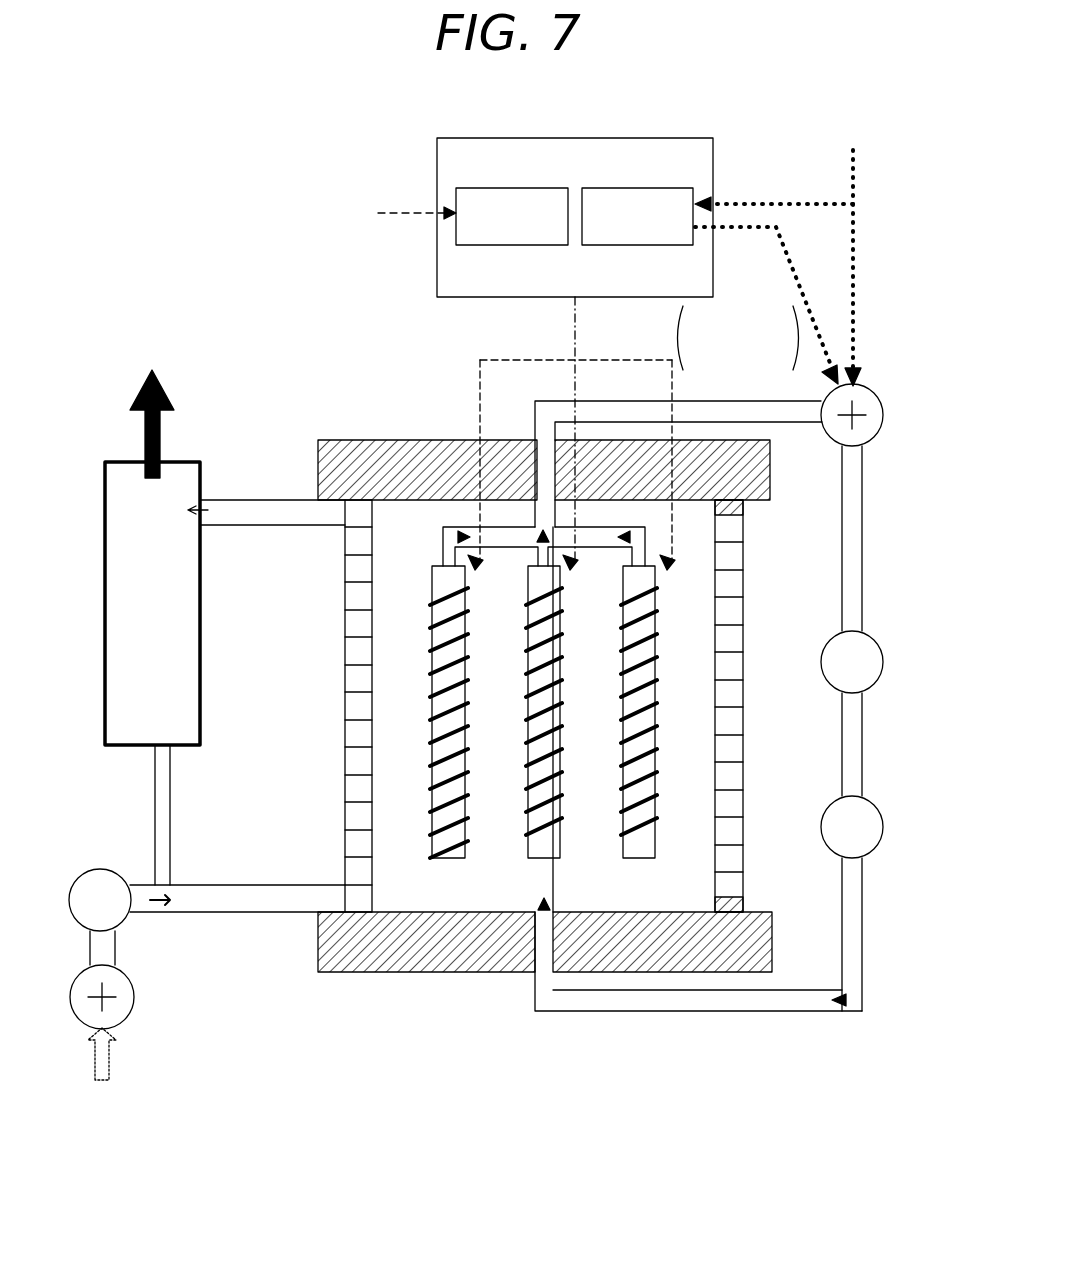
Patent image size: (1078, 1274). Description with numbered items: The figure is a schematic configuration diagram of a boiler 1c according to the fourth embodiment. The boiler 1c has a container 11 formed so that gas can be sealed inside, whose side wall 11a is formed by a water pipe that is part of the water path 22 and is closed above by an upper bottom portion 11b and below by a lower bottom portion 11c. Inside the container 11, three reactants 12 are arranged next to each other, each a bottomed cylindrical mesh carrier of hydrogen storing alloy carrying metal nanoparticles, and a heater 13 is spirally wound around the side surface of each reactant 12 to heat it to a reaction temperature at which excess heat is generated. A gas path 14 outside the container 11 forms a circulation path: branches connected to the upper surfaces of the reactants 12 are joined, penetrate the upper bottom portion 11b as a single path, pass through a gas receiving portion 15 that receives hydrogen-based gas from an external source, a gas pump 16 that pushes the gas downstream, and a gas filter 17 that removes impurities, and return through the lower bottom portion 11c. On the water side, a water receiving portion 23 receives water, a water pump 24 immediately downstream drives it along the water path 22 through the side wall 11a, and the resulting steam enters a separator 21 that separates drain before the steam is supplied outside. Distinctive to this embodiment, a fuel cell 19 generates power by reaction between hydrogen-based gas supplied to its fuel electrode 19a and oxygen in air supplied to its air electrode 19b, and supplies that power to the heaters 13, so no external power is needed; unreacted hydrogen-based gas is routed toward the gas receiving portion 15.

The boiler 1c is at (906, 43).
The container 11 is at (382, 412).
The side wall 11a is at (345, 718).
The upper bottom portion 11b is at (355, 440).
The lower bottom portion 11c is at (325, 975).
The reactant 12 is at (440, 858).
The heater 13 is at (455, 840).
The gas path 14 is at (842, 546).
The gas receiving portion 15 is at (832, 438).
The gas pump 16 is at (876, 642).
The gas filter 17 is at (877, 808).
The fuel cell 19 is at (575, 191).
The fuel electrode 19a is at (606, 245).
The air electrode 19b is at (478, 245).
The separator 21 is at (182, 462).
The water path 22 is at (218, 530).
The water receiving portion 23 is at (134, 1008).
The water pump 24 is at (102, 870).